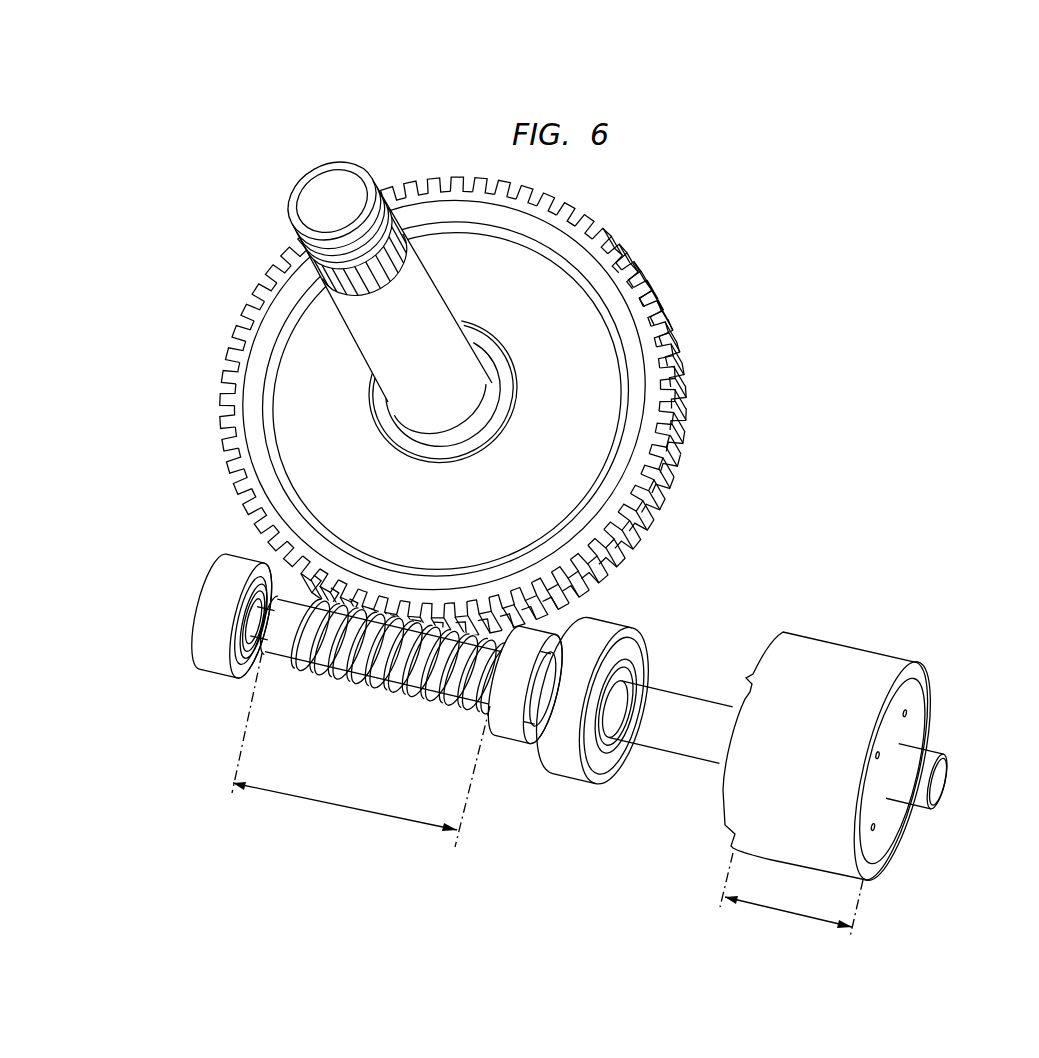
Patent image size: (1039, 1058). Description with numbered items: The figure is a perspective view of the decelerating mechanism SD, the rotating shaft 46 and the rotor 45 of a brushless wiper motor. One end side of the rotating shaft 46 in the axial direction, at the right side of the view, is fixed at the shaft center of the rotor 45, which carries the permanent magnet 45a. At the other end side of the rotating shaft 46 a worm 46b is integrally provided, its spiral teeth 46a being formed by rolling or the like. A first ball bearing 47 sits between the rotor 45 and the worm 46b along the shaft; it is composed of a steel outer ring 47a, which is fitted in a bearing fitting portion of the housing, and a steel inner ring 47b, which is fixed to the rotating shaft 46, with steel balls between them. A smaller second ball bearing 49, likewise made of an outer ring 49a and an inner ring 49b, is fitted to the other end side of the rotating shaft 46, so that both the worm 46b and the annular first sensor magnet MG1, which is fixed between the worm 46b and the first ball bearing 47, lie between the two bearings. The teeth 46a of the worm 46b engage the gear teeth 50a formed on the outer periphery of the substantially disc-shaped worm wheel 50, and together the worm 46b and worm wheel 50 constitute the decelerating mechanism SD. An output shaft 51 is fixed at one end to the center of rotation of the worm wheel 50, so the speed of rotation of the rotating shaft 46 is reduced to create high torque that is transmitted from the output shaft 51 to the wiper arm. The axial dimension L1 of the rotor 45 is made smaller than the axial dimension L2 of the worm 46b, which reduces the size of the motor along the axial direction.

The rotor 45 is at (862, 722).
The permanent magnet 45a is at (832, 660).
The rotating shaft 46 is at (910, 773).
The teeth 46a is at (297, 673).
The worm 46b is at (392, 686).
The first ball bearing 47 is at (636, 704).
The outer ring 47a is at (570, 760).
The inner ring 47b is at (625, 619).
The second ball bearing 49 is at (177, 626).
The outer ring 49a is at (225, 590).
The inner ring 49b is at (197, 638).
The worm wheel 50 is at (329, 447).
The gear teeth 50a is at (686, 441).
The output shaft 51 is at (396, 316).
The first sensor magnet MG1 is at (512, 720).
The decelerating mechanism SD is at (363, 597).
The axial dimension of the rotor L1 is at (791, 895).
The axial dimension of the worm L2 is at (361, 750).